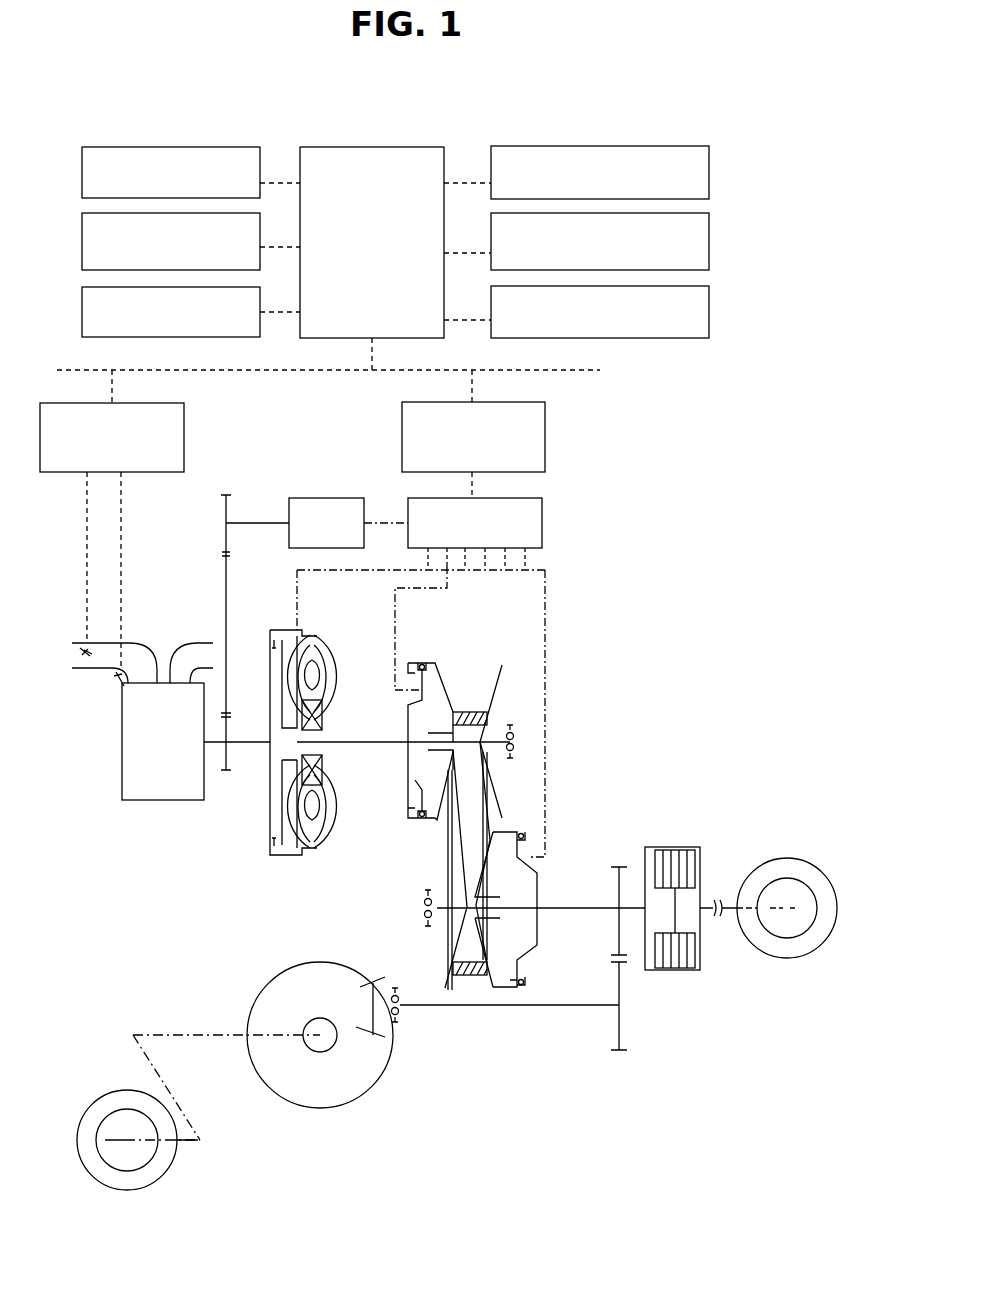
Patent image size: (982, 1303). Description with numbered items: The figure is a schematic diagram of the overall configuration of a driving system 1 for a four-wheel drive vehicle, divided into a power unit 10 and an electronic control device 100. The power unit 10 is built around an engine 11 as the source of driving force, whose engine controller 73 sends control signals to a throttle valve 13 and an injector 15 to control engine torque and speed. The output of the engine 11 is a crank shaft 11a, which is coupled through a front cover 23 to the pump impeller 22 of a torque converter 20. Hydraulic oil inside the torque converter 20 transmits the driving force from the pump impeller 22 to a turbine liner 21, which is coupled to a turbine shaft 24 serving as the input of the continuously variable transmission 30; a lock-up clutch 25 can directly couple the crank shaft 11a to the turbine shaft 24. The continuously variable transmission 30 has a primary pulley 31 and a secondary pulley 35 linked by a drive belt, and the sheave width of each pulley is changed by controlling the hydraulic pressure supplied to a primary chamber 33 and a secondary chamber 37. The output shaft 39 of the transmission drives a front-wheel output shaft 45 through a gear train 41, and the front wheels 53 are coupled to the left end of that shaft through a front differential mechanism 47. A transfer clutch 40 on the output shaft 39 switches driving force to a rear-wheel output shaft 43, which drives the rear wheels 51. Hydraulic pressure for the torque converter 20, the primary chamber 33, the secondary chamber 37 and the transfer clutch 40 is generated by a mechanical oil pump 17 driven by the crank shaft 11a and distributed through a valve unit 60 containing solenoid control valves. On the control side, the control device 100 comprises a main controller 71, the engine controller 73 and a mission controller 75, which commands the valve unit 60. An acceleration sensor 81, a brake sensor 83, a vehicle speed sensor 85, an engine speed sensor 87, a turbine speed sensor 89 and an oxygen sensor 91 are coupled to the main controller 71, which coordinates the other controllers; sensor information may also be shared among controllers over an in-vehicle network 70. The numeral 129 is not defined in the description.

The driving system 1 is at (616, 1154).
The power unit 10 is at (155, 864).
The engine 11 is at (158, 800).
The crank shaft 11a is at (262, 745).
The throttle valve 13 is at (80, 650).
The injector 15 is at (116, 677).
The oil pump 17 is at (310, 498).
The torque converter 20 is at (314, 626).
The turbine liner 21 is at (300, 660).
The pump impeller 22 is at (322, 650).
The front cover 23 is at (270, 812).
The turbine shaft 24 is at (350, 740).
The lock-up clutch 25 is at (290, 855).
The continuously variable transmission 30 is at (384, 846).
The primary pulley 31 is at (498, 712).
The primary chamber 33 is at (418, 790).
The secondary pulley 35 is at (441, 882).
The secondary chamber 37 is at (524, 946).
The output shaft 39 is at (560, 906).
The transfer clutch 40 is at (682, 842).
The gear train 41 is at (623, 856).
The rear-wheel output shaft 43 is at (700, 906).
The front-wheel output shaft 45 is at (514, 1005).
The front differential mechanism 47 is at (323, 957).
The rear wheels 51 is at (789, 858).
The front wheels 53 is at (114, 1100).
The valve unit 60 is at (542, 508).
The in-vehicle network 70 is at (72, 369).
The main controller 71 is at (410, 147).
The engine controller 73 is at (152, 403).
The mission controller 75 is at (513, 402).
The acceleration sensor 81 is at (82, 185).
The brake sensor 83 is at (82, 257).
The vehicle speed sensor 85 is at (82, 322).
The engine speed sensor 87 is at (709, 183).
The turbine speed sensor 89 is at (709, 255).
The oxygen sensor 91 is at (709, 320).
The control device 100 is at (286, 148).
The secondary pulley 129 is at (442, 822).